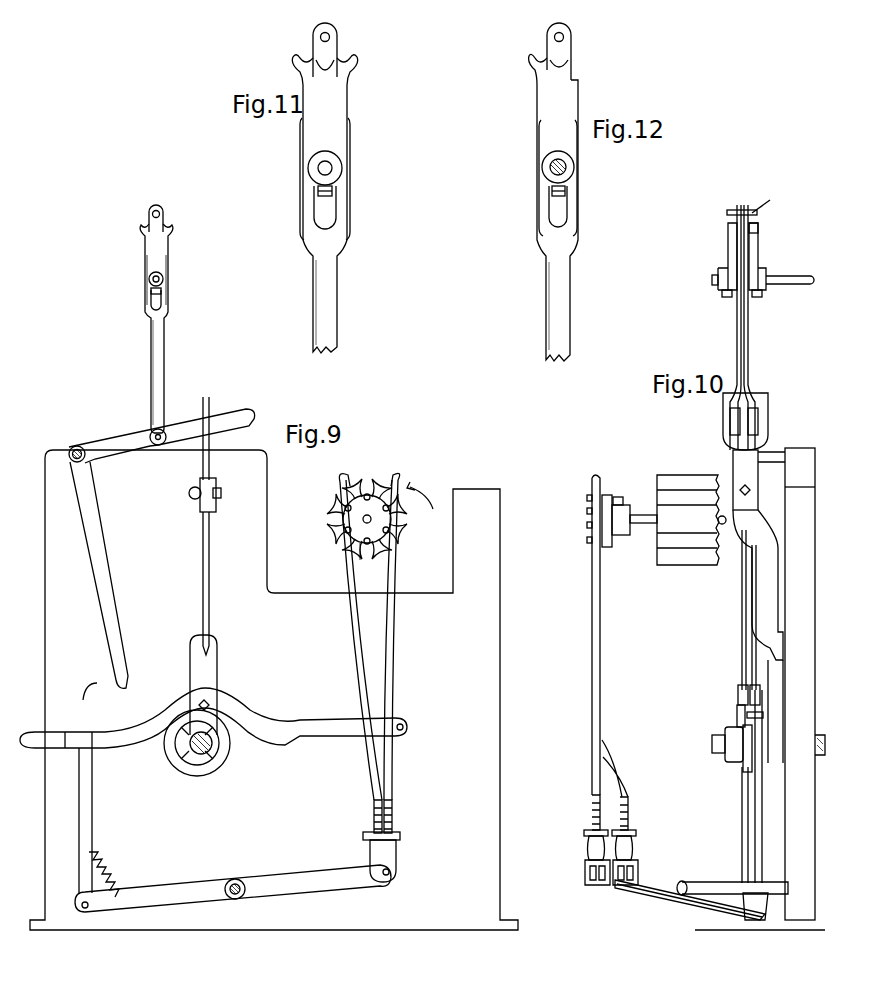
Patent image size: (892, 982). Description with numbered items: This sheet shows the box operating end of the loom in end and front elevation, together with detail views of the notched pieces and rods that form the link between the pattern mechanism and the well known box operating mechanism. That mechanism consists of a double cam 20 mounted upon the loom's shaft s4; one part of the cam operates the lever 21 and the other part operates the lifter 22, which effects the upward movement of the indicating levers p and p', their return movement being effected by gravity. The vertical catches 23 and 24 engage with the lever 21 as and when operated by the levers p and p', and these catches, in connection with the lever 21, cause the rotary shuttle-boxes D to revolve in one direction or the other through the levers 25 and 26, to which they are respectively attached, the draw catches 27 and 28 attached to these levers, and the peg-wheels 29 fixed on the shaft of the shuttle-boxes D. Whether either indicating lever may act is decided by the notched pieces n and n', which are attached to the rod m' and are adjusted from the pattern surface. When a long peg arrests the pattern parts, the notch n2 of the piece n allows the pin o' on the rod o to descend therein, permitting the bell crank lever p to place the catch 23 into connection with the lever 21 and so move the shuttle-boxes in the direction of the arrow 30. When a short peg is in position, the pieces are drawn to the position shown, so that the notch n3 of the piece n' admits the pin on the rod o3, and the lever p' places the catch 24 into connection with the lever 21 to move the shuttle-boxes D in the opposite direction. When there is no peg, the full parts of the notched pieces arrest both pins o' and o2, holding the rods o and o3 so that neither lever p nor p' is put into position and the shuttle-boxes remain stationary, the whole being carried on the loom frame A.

In FIG. 11, the pin o2 is at (330, 36).
In FIG. 9, the pin o2 is at (159, 212).
In FIG. 10, the pin o2 is at (727, 213).
In FIG. 11, the notch n3 is at (330, 73).
In FIG. 9, the notch n3 is at (163, 232).
In FIG. 11, the notched piece n' is at (325, 171).
In FIG. 9, the notched piece n' is at (174, 272).
In FIG. 10, the notched piece n' is at (709, 260).
In FIG. 11, the rod m' is at (349, 167).
In FIG. 12, the rod m' is at (531, 172).
In FIG. 9, the rod m' is at (176, 275).
In FIG. 10, the rod m' is at (790, 297).
In FIG. 12, the rod o is at (573, 300).
In FIG. 9, the rod o is at (171, 382).
In FIG. 10, the rod o is at (763, 327).
In FIG. 11, the rod o3 is at (325, 270).
In FIG. 10, the rod o3 is at (736, 342).
In FIG. 12, the pin o' is at (575, 49).
In FIG. 10, the pin o' is at (769, 198).
In FIG. 12, the notch n2 is at (576, 72).
In FIG. 10, the notch n2 is at (759, 230).
In FIG. 12, the notched piece n is at (558, 169).
In FIG. 10, the notched piece n is at (767, 260).
In FIG. 9, the bell crank lever p is at (162, 551).
In FIG. 10, the bell crank lever p is at (744, 578).
In FIG. 10, the lever p' is at (717, 556).
In FIG. 9, the lifter 22 is at (206, 662).
In FIG. 10, the lifter 22 is at (745, 477).
In FIG. 9, the rotary shuttle-boxes D is at (360, 478).
In FIG. 10, the rotary shuttle-boxes D is at (688, 545).
In FIG. 9, the arrow 30 is at (425, 492).
In FIG. 9, the peg-wheels 29 is at (367, 545).
In FIG. 10, the peg-wheels 29 is at (606, 547).
In FIG. 9, the frame A is at (274, 690).
In FIG. 10, the frame A is at (760, 689).
In FIG. 9, the lever 21 is at (121, 740).
In FIG. 9, the loom's shaft s4 is at (215, 746).
In FIG. 9, the double cam 20 is at (208, 760).
In FIG. 10, the double cam 20 is at (752, 762).
In FIG. 9, the vertical catch 24 is at (92, 815).
In FIG. 10, the vertical catch 24 is at (742, 816).
In FIG. 9, the lever 26 is at (233, 888).
In FIG. 10, the lever 26 is at (685, 900).
In FIG. 9, the draw catch 27 is at (367, 758).
In FIG. 10, the draw catch 27 is at (625, 785).
In FIG. 9, the draw catch 28 is at (390, 778).
In FIG. 10, the draw catch 28 is at (594, 777).
In FIG. 10, the vertical catch 23 is at (762, 810).
In FIG. 10, the lever 25 is at (655, 878).